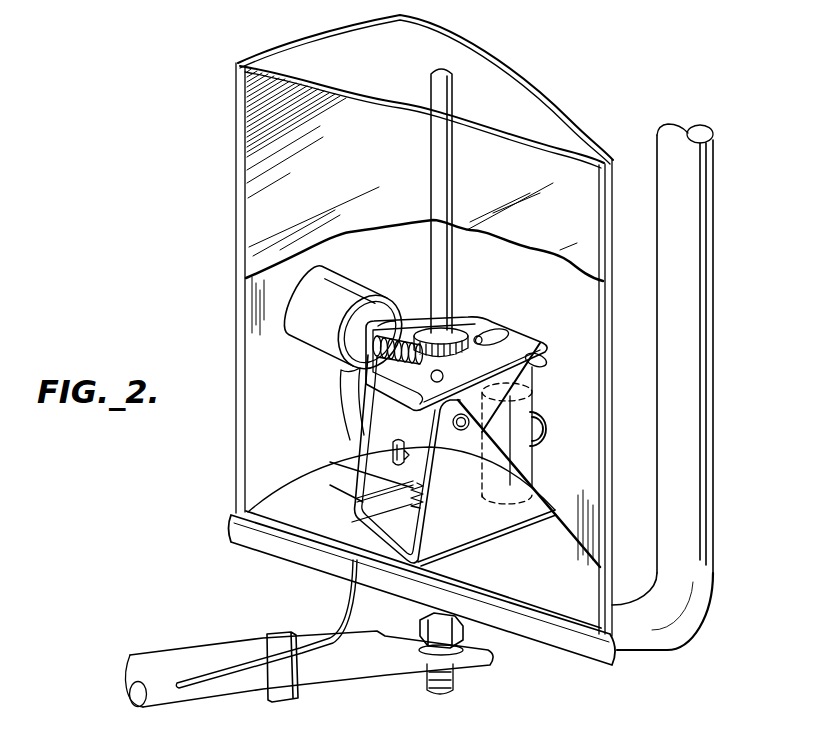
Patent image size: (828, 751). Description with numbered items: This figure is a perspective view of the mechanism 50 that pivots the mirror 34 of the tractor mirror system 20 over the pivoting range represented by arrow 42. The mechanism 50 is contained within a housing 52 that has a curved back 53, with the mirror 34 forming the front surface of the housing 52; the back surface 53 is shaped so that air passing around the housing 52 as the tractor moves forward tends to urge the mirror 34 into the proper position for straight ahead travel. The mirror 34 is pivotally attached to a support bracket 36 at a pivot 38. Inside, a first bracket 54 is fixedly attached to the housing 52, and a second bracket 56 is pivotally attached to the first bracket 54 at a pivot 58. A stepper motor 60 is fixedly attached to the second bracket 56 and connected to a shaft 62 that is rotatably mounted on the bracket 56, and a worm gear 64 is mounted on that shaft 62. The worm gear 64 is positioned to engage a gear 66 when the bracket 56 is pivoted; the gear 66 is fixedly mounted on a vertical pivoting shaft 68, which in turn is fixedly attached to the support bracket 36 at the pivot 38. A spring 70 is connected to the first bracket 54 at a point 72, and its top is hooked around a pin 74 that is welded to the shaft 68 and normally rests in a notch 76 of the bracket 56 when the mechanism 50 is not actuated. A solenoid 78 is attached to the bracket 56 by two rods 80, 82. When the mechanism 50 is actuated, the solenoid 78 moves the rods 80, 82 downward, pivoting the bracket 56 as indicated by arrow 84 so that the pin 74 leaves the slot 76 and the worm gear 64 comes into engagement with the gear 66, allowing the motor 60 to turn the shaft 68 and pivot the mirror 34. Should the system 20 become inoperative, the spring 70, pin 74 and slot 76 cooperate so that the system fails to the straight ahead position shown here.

The system 20 is at (202, 503).
The mirror 34 is at (273, 202).
The support bracket 36 is at (693, 355).
The pivot 38 is at (424, 616).
The arrow 42 is at (130, 305).
The mechanism 50 is at (324, 405).
The housing 52 is at (290, 560).
The curved back 53 is at (258, 380).
The first bracket 54 is at (437, 543).
The second bracket 56 is at (478, 388).
The pivot 58 is at (465, 432).
The stepper motor 60 is at (340, 283).
The shaft 62 is at (405, 318).
The worm gear 64 is at (343, 384).
The gear 66 is at (462, 333).
The vertical pivoting shaft 68 is at (448, 260).
The spring 70 is at (408, 518).
The spring connection point 72 is at (380, 503).
The pin 74 is at (358, 454).
The notch 76 is at (403, 440).
The solenoid 78 is at (516, 457).
The rod 80 is at (532, 352).
The rod 82 is at (490, 330).
The arrow 84 is at (562, 393).